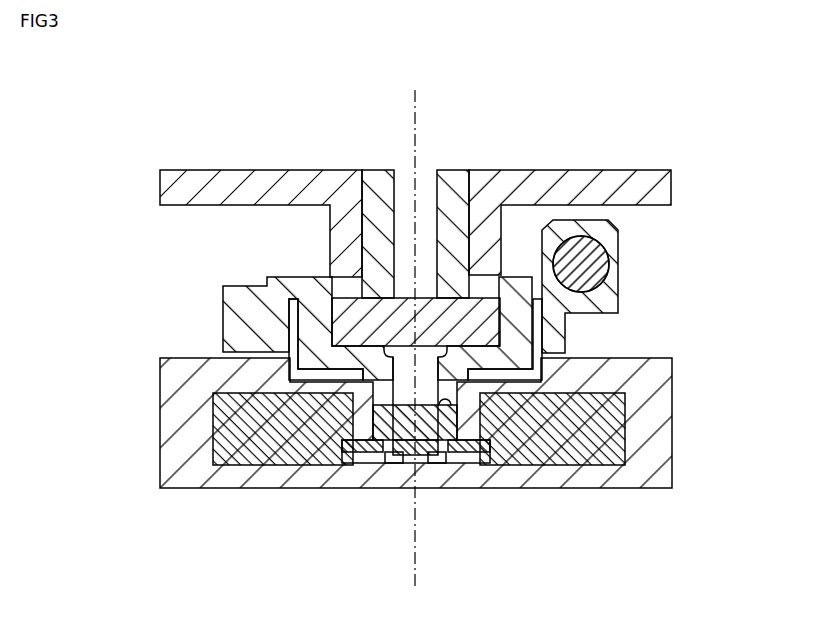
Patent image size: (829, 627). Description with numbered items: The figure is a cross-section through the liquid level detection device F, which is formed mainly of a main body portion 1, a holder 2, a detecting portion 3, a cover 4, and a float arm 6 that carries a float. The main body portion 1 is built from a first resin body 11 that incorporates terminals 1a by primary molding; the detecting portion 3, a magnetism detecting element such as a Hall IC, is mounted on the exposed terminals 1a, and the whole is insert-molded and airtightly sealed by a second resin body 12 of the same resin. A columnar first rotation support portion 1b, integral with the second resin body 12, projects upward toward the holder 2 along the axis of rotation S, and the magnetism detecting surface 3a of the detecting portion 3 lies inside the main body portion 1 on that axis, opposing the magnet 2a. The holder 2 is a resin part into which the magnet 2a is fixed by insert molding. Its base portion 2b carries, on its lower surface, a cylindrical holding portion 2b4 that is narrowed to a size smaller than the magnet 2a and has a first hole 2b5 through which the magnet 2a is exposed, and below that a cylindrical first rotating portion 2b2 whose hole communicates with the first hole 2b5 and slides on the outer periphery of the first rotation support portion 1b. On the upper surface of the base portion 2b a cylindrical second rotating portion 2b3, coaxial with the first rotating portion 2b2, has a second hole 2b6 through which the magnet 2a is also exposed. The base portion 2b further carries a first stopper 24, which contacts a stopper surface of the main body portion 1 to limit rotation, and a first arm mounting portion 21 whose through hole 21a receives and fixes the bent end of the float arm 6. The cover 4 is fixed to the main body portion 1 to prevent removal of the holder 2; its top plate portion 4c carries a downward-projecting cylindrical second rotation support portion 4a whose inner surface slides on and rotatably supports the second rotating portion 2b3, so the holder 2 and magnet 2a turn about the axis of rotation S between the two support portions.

The main body portion 1 is at (158, 487).
The terminals 1a is at (375, 453).
The first rotation support portion 1b is at (417, 490).
The holder 2 is at (218, 278).
The magnet 2a is at (430, 318).
The base portion 2b is at (280, 272).
The first rotating portion 2b2 is at (368, 385).
The second rotating portion 2b3 is at (372, 262).
The holding portion 2b4 is at (312, 341).
The first hole 2b5 is at (400, 458).
The second hole 2b6 is at (400, 215).
The detecting portion 3 is at (436, 428).
The magnetism detecting surface 3a is at (452, 408).
The cover 4 is at (675, 178).
The second rotation support portion 4a is at (343, 255).
The top plate portion 4c is at (277, 180).
The float arm 6 is at (580, 248).
The first resin body 11 is at (280, 440).
The second resin body 12 is at (172, 415).
The first arm mounting portion 21 is at (625, 210).
The through hole 21a is at (596, 274).
The first stopper 24 is at (232, 327).
The liquid level detection device F is at (238, 144).
The axis of rotation S is at (421, 92).